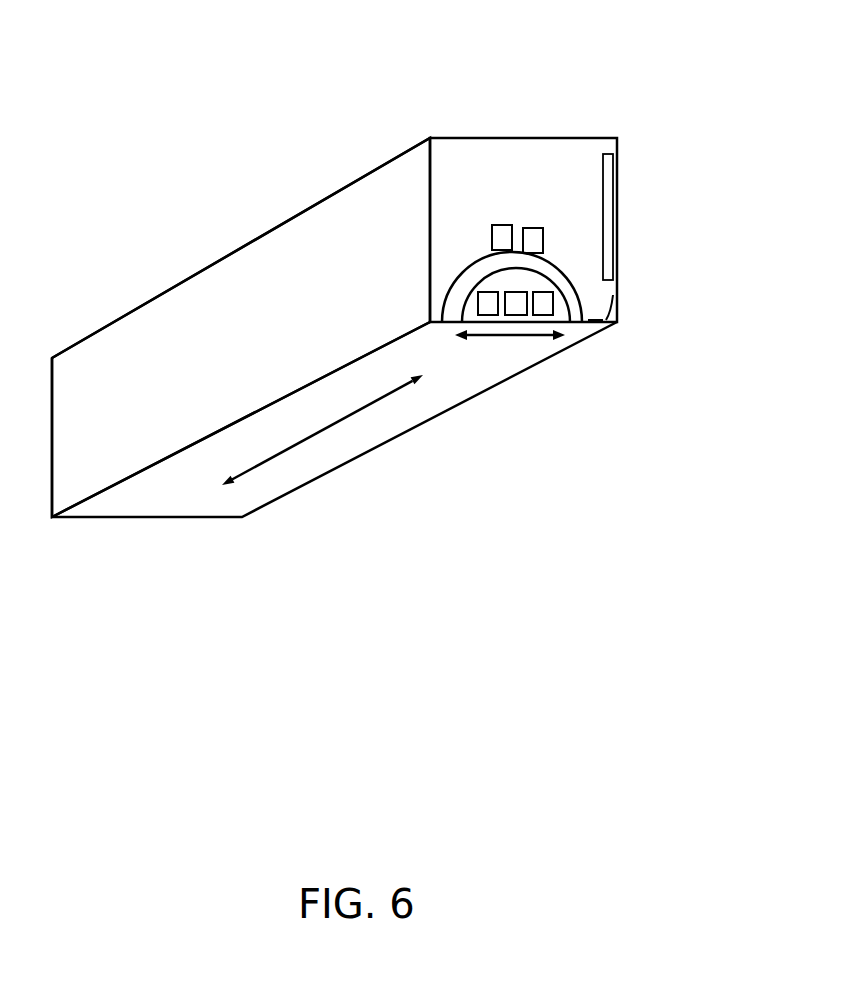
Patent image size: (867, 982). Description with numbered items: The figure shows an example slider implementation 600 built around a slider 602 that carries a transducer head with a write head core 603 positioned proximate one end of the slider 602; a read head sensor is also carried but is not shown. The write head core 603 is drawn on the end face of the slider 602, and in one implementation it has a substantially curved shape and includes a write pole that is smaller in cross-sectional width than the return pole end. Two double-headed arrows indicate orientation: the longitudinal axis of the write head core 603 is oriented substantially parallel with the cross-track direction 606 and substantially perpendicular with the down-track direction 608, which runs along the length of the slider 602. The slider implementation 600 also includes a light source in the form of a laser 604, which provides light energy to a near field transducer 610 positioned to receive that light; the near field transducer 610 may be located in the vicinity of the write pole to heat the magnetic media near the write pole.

The slider implementation 600 is at (139, 93).
The slider 602 is at (279, 299).
The write head core 603 is at (462, 280).
The laser 604 is at (607, 210).
The cross-track direction 606 is at (522, 335).
The down-track direction 608 is at (373, 402).
The near field transducer 610 is at (617, 322).